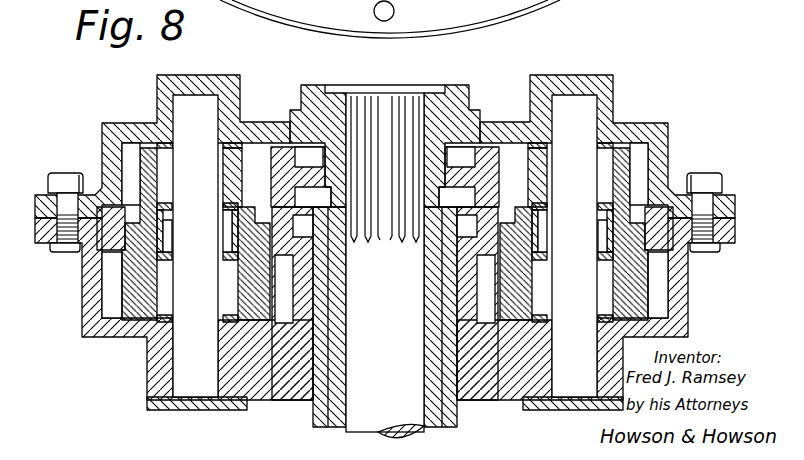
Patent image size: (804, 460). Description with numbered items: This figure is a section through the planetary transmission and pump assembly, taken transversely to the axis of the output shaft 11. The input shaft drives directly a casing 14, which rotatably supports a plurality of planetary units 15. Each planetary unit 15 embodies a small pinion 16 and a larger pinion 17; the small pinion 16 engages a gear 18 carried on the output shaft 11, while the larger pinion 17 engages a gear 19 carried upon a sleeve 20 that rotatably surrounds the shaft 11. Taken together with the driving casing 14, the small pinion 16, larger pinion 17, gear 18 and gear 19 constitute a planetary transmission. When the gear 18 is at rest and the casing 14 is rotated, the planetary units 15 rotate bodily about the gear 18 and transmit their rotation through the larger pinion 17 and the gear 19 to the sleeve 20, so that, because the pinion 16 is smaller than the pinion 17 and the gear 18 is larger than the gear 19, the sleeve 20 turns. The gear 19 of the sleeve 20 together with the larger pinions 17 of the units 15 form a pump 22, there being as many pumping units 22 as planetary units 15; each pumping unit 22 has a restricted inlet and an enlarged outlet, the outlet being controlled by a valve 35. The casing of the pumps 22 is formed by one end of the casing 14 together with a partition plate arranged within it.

The output shaft 11 is at (383, 103).
The casing 14 is at (157, 92).
The planetary unit 15 is at (150, 230).
The small pinion 16 is at (130, 158).
The larger pinion 17 is at (113, 298).
The gear 18 is at (485, 152).
The gear 19 is at (313, 293).
The sleeve 20 is at (340, 397).
The pump 22 is at (104, 279).
The valve 35 is at (301, 0).